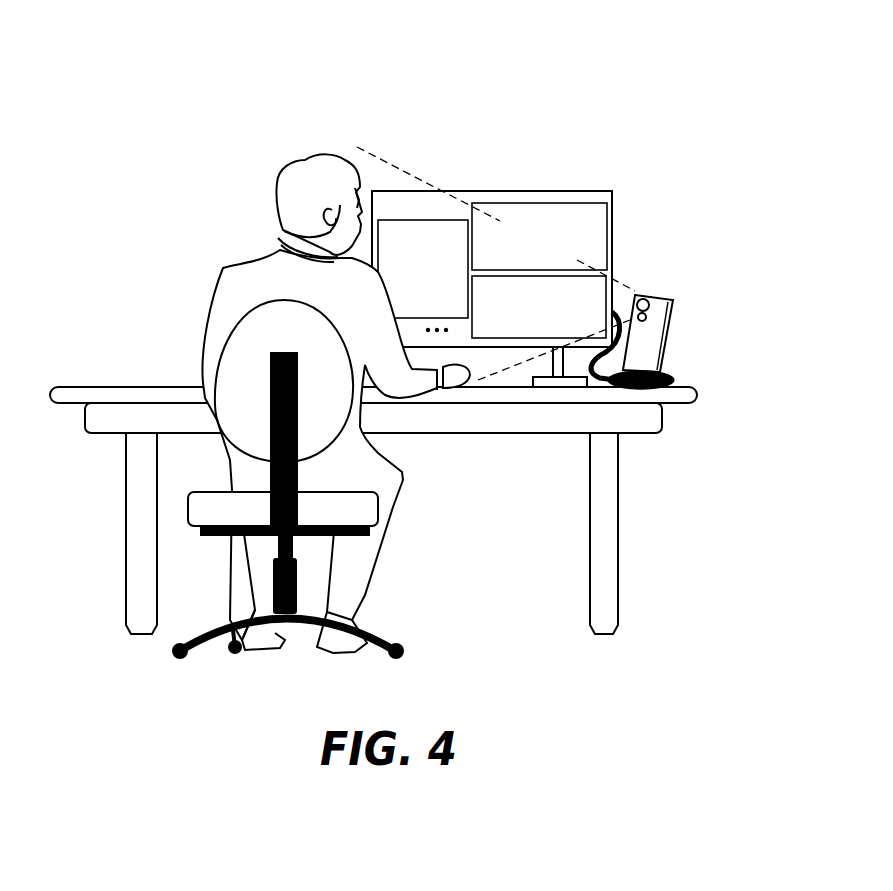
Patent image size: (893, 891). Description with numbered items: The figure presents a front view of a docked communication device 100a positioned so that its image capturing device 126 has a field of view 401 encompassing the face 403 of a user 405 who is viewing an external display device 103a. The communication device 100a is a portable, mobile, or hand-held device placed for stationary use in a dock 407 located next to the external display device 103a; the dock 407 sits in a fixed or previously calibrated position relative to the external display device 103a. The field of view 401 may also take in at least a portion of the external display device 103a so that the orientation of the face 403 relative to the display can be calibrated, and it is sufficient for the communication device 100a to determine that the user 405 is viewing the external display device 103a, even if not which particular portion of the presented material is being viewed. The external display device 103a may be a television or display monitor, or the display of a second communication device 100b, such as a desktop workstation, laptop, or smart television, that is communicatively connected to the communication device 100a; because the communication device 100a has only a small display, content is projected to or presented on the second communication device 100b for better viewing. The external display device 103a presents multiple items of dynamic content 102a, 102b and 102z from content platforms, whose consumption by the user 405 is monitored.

The communication device 100a is at (673, 300).
The second communication device 100b is at (557, 352).
The dynamic content 102a is at (401, 304).
The dynamic content 102b is at (598, 258).
The dynamic content 102z is at (597, 330).
The external display device 103a is at (492, 255).
The image capturing device 126 is at (642, 295).
The field of view 401 is at (402, 173).
The face 403 is at (378, 192).
The user 405 is at (243, 262).
The dock 407 is at (677, 373).